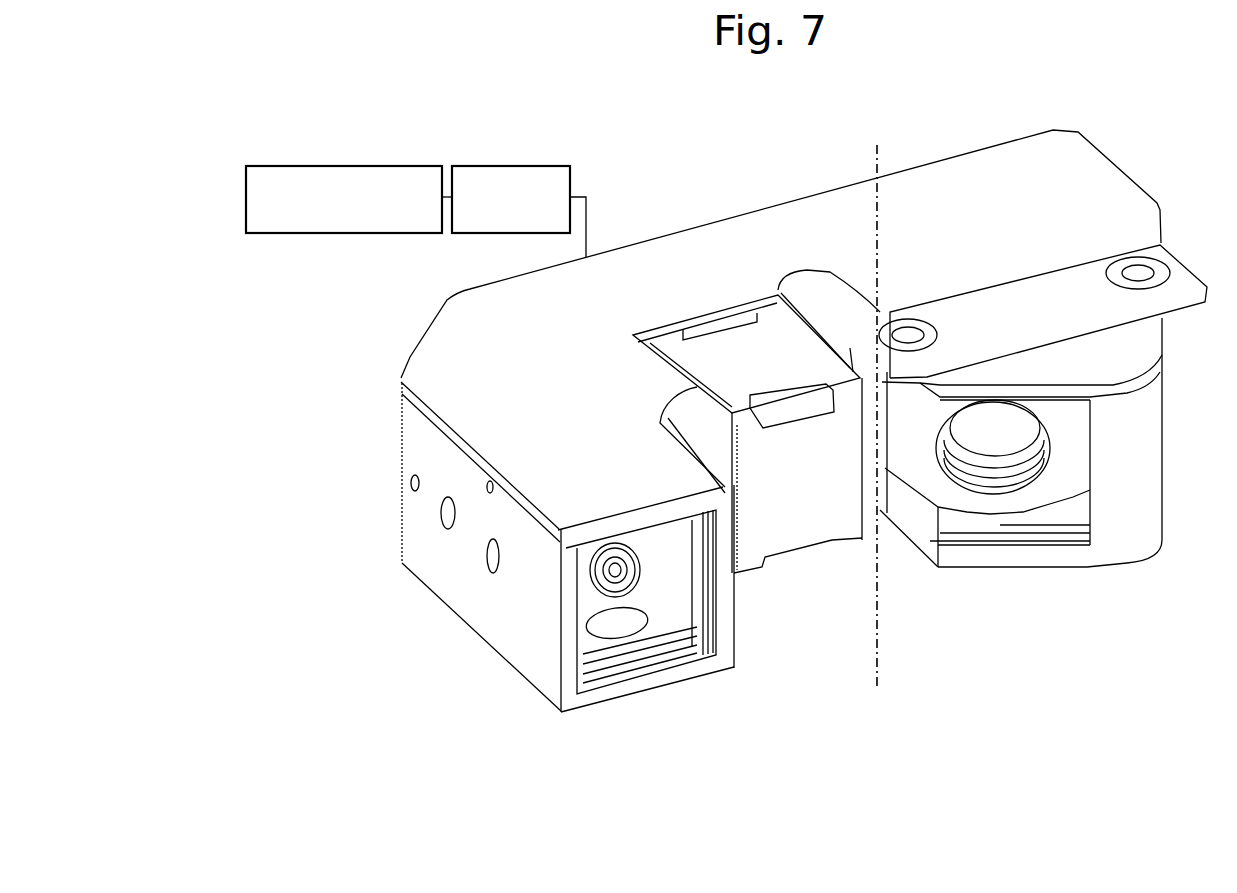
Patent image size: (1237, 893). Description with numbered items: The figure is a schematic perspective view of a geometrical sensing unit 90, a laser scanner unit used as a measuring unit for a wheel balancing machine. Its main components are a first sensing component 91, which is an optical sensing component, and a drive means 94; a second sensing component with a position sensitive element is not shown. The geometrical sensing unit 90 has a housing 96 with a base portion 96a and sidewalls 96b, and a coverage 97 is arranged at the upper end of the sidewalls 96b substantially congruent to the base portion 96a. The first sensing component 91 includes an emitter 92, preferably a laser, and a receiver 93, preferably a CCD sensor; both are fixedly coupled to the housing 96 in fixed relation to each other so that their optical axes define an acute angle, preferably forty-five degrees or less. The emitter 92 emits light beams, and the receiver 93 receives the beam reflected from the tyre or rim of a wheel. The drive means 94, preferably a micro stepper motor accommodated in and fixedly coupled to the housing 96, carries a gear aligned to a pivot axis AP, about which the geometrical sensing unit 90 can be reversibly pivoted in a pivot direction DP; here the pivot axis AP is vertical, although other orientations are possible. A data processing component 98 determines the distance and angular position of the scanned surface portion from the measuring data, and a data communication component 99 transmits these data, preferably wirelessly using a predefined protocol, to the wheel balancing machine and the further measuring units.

The geometrical sensing unit 90 is at (710, 122).
The first sensing component 91 is at (722, 768).
The emitter 92 is at (622, 574).
The receiver 93 is at (1123, 532).
The drive means 94 is at (730, 345).
The housing 96 is at (282, 603).
The base portion 96a is at (487, 648).
The sidewalls 96b is at (418, 527).
The coverage 97 is at (485, 358).
The data processing component 98 is at (494, 164).
The data communication component 99 is at (402, 164).
The pivot direction DP is at (897, 118).
The pivot axis AP is at (888, 185).